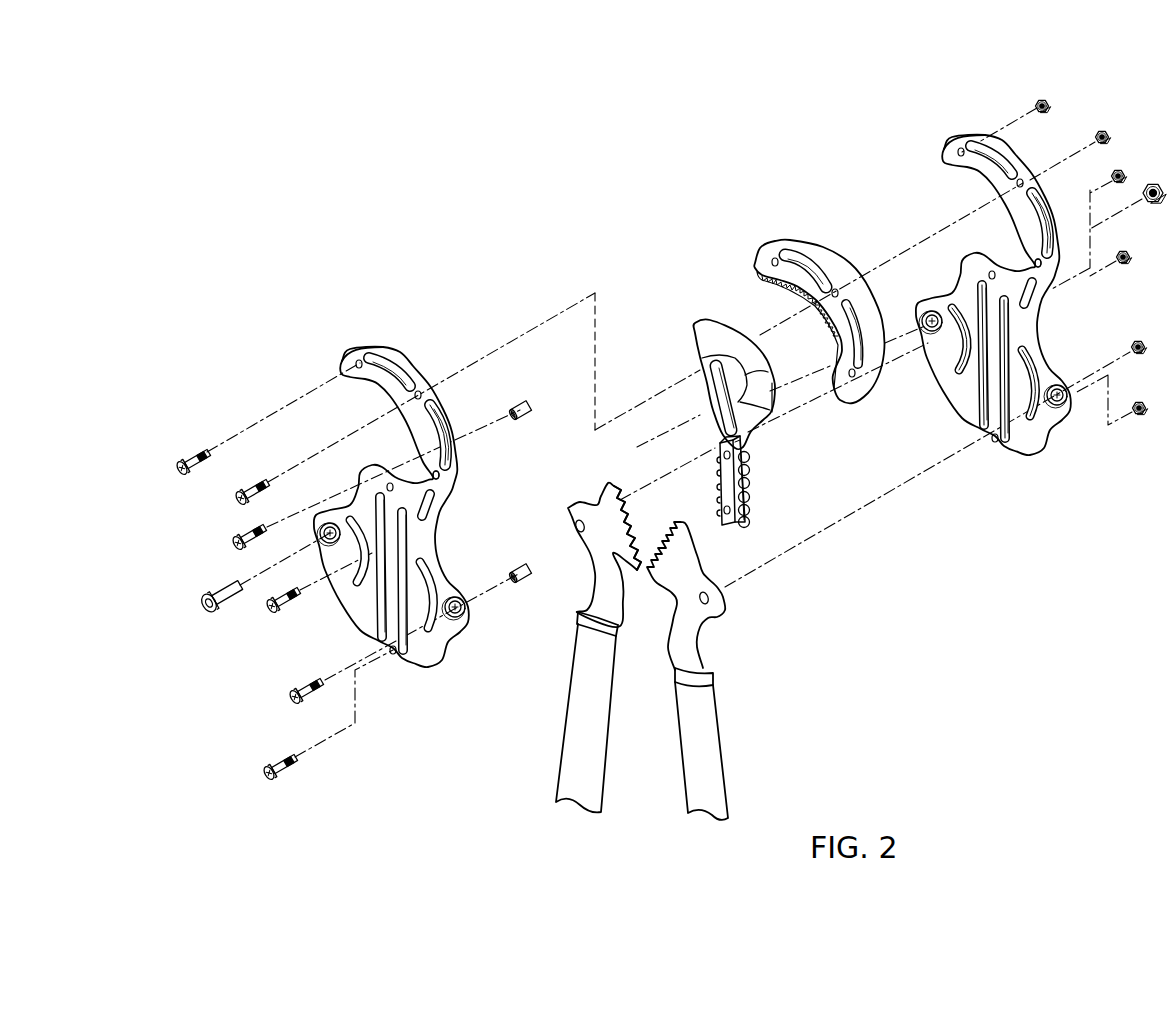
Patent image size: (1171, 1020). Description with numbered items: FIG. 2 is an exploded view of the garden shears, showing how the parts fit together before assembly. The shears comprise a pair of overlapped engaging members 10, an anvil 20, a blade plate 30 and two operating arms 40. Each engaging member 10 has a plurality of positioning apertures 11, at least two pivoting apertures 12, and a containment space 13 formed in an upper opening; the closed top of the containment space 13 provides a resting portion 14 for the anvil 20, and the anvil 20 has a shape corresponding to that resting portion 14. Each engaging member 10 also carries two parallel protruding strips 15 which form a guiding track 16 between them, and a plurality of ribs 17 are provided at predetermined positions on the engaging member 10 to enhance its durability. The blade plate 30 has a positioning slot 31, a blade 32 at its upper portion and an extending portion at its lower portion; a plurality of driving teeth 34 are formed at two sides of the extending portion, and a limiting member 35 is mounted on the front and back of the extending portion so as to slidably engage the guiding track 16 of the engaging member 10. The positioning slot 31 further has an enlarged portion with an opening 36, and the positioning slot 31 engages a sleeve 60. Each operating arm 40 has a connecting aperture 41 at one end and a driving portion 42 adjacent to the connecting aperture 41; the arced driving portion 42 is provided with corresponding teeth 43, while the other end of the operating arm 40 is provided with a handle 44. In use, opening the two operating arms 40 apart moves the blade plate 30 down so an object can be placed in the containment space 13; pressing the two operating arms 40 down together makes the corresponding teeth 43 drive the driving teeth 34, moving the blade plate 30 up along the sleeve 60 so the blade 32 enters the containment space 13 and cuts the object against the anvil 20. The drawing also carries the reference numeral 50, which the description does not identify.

The engaging member 10 is at (690, 371).
The positioning apertures 11 is at (440, 476).
The pivoting apertures 12 is at (328, 536).
The containment space 13 is at (383, 392).
The resting portion 14 is at (348, 361).
The protruding strips 15 is at (962, 318).
The guiding track 16 is at (993, 382).
The ribs 17 is at (450, 410).
The anvil 20 is at (840, 230).
The blade plate 30 is at (734, 389).
The positioning slot 31 is at (718, 408).
The blade 32 is at (733, 338).
The driving teeth 34 is at (786, 474).
The limiting member 35 is at (747, 467).
The opening 36 is at (755, 375).
The operating arm 40 is at (648, 627).
The connecting aperture 41 is at (578, 524).
The driving portion 42 is at (598, 508).
The corresponding teeth 43 is at (624, 500).
The handle 44 is at (575, 735).
The bolts and nuts 50 is at (180, 448).
The sleeve 60 is at (524, 399).